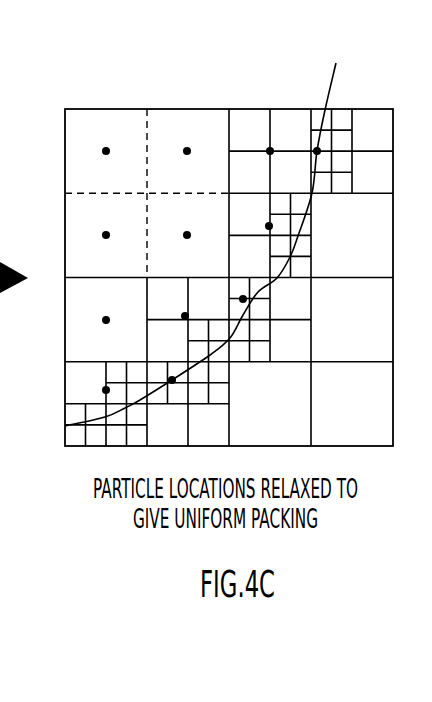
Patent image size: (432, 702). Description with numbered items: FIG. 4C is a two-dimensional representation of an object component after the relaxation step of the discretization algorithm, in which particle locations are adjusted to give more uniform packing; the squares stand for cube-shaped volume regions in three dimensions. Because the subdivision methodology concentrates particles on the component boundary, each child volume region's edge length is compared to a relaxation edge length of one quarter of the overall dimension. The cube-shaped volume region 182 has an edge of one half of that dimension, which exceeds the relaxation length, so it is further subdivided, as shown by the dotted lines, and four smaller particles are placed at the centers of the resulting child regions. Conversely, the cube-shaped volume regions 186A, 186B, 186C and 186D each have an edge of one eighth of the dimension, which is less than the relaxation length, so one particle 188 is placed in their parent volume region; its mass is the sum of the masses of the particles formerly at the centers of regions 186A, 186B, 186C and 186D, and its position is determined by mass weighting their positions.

The cube-shaped volume region 182 is at (204, 109).
The cube-shaped volume region 186A is at (254, 123).
The cube-shaped volume region 186B is at (281, 122).
The cube-shaped volume region 186C is at (250, 168).
The cube-shaped volume region 186D is at (293, 182).
The particle 188 is at (207, 232).